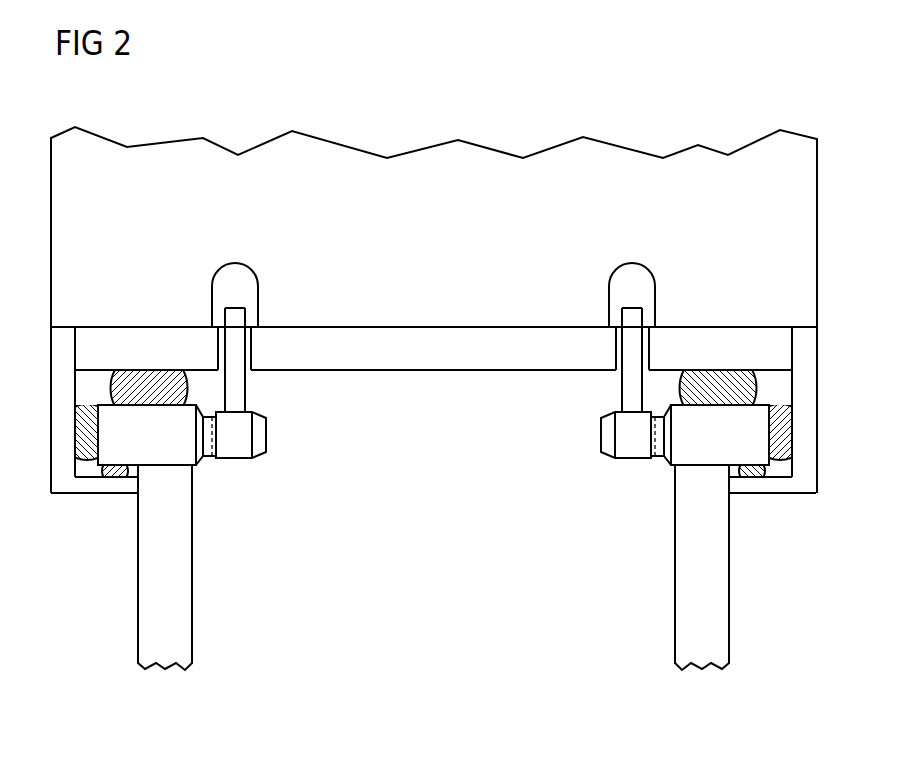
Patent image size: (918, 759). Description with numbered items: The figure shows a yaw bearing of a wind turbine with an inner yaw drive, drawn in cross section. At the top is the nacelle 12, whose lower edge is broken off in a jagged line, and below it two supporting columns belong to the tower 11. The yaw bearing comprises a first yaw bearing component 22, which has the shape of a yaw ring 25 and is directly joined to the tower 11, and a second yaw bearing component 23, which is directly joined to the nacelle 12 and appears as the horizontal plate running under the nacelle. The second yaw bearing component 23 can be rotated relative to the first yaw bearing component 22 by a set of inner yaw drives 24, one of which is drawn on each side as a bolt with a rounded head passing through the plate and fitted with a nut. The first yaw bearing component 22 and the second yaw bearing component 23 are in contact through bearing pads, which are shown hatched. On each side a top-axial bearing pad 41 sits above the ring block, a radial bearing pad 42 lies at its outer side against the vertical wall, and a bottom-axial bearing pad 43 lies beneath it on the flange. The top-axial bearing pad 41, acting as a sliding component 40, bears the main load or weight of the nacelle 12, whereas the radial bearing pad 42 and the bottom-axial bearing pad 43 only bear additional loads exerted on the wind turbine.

The tower 11 is at (182, 582).
The nacelle 12 is at (440, 158).
The first yaw bearing component 22 is at (433, 467).
The second yaw bearing component 23 is at (118, 338).
The inner yaw drive 24 is at (240, 435).
The yaw ring 25 is at (162, 455).
The sliding component 40 is at (434, 356).
The top-axial bearing pad 41 is at (152, 377).
The radial bearing pad 42 is at (90, 430).
The bottom-axial bearing pad 43 is at (117, 479).